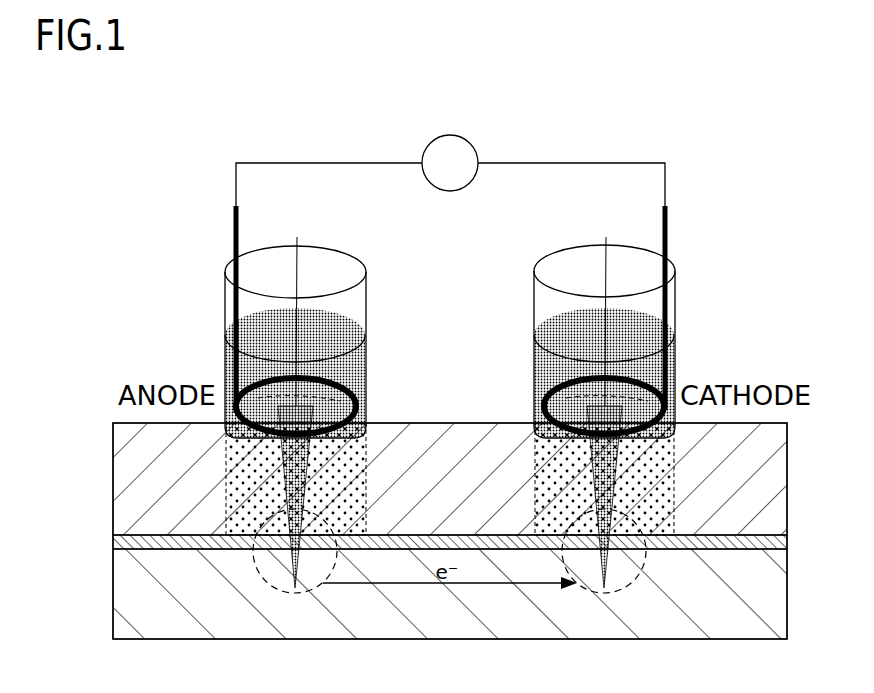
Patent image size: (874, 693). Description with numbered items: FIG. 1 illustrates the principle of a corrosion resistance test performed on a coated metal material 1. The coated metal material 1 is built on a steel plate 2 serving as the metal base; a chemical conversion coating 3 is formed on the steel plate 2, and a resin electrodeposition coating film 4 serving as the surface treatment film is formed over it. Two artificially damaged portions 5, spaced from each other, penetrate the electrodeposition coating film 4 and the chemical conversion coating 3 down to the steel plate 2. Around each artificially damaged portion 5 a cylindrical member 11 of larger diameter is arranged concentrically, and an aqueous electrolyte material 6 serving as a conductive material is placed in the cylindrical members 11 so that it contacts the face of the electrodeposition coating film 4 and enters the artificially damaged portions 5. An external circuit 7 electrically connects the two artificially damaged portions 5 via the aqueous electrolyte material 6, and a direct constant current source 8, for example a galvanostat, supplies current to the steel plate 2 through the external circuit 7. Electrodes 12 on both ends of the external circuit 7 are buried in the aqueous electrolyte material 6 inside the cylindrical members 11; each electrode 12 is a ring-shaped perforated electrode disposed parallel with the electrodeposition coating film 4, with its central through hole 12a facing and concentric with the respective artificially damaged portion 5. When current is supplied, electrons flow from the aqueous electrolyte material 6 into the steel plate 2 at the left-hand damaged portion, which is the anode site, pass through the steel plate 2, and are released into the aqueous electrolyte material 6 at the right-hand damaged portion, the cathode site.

The coated metal material 1 is at (797, 320).
The steel plate 2 is at (135, 606).
The chemical conversion coating 3 is at (128, 543).
The electrodeposition coating film 4 is at (135, 442).
The artificially damaged portions 5 is at (278, 481).
The aqueous electrolyte material 6 is at (335, 323).
The external circuit 7 is at (577, 162).
The direct constant current source 8 is at (450, 135).
The cylindrical members 11 is at (333, 246).
The electrodes 12 is at (451, 397).
The through hole 12a is at (348, 405).